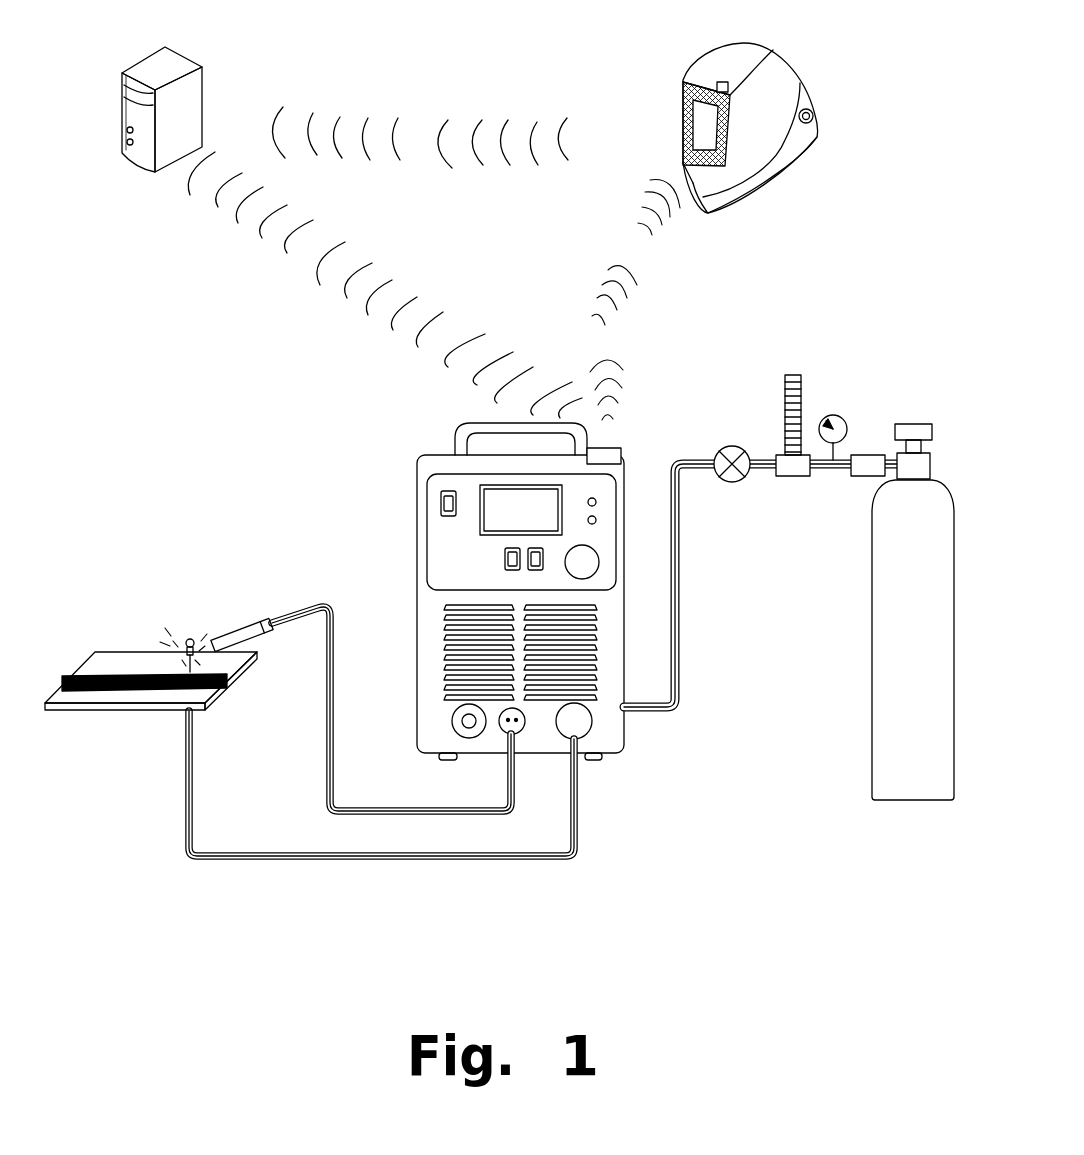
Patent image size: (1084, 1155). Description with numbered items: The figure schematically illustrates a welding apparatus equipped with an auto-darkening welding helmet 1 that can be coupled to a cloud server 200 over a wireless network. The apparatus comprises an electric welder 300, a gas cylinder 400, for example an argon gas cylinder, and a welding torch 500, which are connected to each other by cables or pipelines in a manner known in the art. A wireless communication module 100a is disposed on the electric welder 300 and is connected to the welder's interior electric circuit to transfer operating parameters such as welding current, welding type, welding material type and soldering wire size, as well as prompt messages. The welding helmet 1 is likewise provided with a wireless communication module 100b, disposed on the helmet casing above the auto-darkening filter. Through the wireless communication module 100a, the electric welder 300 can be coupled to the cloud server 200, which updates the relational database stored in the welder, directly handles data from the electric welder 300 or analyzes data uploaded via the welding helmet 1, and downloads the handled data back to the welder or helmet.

The auto-darkening welding helmet 1 is at (780, 39).
The wireless communication module 100a is at (602, 457).
The wireless communication module 100b is at (714, 82).
The cloud server 200 is at (162, 109).
The electric welder 300 is at (405, 488).
The gas cylinder 400 is at (913, 612).
The welding torch 500 is at (223, 633).